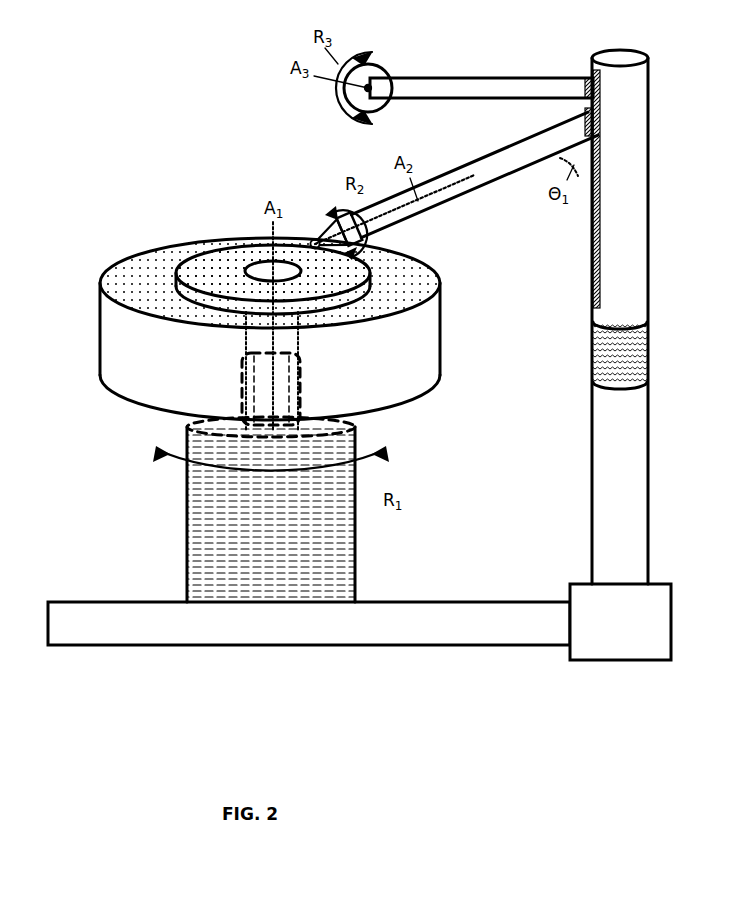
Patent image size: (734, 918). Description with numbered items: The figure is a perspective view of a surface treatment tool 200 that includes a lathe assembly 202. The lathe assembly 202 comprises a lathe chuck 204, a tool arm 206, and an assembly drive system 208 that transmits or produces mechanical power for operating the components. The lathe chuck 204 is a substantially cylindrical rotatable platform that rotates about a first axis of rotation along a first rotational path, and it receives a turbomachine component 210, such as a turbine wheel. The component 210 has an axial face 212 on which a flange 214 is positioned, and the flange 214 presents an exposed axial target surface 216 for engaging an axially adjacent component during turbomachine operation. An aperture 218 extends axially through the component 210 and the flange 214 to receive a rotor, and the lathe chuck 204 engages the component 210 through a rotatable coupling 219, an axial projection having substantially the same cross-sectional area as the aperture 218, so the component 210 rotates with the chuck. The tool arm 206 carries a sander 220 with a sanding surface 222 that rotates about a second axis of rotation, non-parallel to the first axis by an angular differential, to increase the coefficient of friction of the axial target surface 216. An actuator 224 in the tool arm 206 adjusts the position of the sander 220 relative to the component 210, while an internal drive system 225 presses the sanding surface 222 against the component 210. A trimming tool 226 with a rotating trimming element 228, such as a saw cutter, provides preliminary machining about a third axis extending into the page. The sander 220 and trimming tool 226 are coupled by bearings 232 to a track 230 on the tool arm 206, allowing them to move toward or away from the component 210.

The surface treatment tool 200 is at (258, 672).
The lathe assembly 202 is at (455, 645).
The lathe chuck 204 is at (192, 494).
The tool arm 206 is at (648, 205).
The assembly drive system 208 is at (620, 622).
The turbomachine component 210 is at (100, 372).
The axial face 212 is at (140, 270).
The flange 214 is at (226, 300).
The axial target surface 216 is at (206, 258).
The aperture 218 is at (264, 263).
The rotatable coupling 219 is at (292, 387).
The sander 220 is at (467, 193).
The sanding surface 222 is at (313, 239).
The actuator 224 is at (650, 352).
The internal drive system 225 is at (316, 238).
The trimming tool 226 is at (456, 78).
The trimming element 228 is at (380, 66).
The track 230 is at (598, 150).
The bearings 232 is at (583, 80).